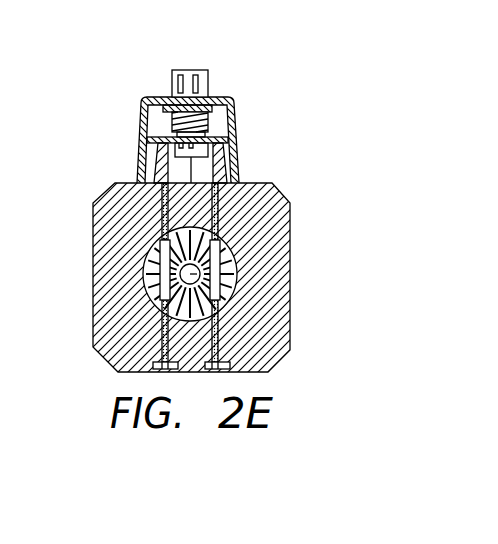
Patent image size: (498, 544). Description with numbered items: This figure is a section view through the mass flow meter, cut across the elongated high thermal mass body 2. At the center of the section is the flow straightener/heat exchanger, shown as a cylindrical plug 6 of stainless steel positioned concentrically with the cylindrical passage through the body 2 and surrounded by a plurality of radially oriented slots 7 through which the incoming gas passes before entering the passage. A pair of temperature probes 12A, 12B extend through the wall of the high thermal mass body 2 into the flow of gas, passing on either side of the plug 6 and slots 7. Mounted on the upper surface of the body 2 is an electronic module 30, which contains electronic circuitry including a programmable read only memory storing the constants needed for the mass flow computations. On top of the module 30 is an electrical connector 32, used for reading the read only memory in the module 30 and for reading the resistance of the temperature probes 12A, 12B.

The high thermal mass body 2 is at (105, 363).
The cylindrical plug 6 is at (205, 271).
The radially oriented slots 7 is at (160, 275).
The temperature probe 12A is at (160, 200).
The temperature probe 12B is at (222, 198).
The electronic module 30 is at (140, 108).
The electrical connector 32 is at (183, 70).